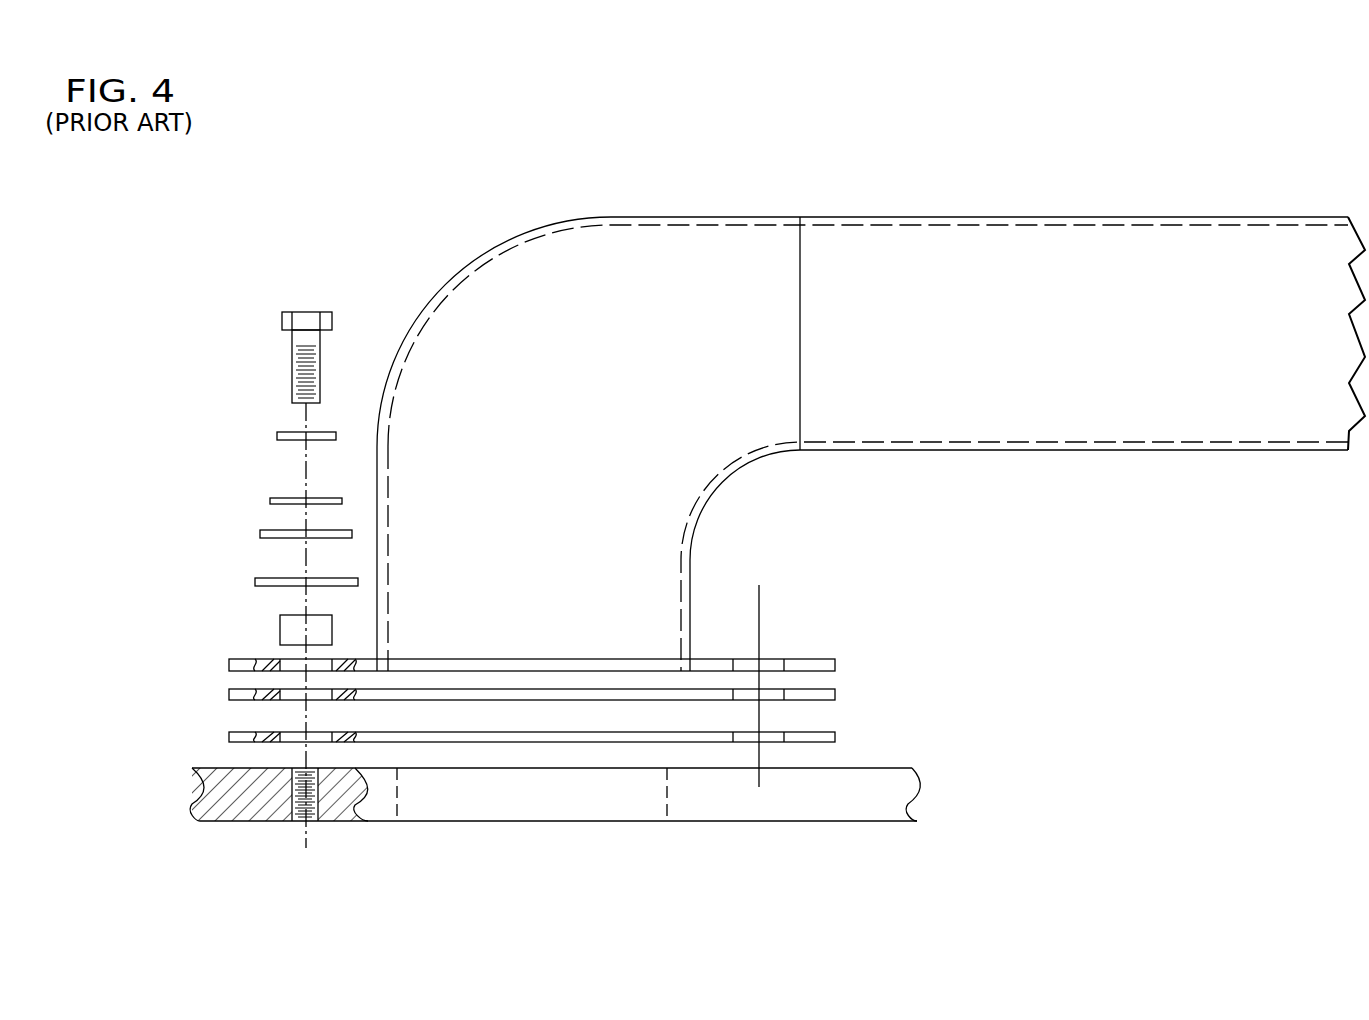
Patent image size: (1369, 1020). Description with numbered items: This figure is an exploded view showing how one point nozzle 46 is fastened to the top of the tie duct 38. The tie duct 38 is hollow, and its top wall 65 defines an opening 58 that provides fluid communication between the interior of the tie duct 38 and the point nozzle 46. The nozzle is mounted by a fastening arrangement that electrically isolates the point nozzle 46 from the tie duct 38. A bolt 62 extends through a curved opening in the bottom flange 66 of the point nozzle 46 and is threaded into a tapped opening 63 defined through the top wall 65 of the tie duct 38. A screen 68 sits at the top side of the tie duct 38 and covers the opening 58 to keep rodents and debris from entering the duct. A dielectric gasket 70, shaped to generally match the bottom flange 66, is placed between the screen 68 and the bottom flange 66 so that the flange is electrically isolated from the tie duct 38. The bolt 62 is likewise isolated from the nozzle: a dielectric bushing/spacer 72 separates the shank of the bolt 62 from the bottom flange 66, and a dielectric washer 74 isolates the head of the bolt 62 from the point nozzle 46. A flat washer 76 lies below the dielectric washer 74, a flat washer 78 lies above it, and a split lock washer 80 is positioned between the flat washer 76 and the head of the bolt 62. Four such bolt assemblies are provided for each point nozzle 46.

The point nozzle 46 is at (945, 217).
The bolt 62 is at (308, 311).
The split lock washer 80 is at (279, 436).
The flat washer 78 is at (272, 500).
The dielectric washer 74 is at (262, 533).
The flat washer 76 is at (257, 581).
The dielectric bushing/spacer 72 is at (281, 625).
The bottom flange 66 is at (836, 664).
The dielectric gasket 70 is at (836, 694).
The screen 68 is at (836, 737).
The tie duct 38 is at (912, 768).
The top wall 65 is at (871, 822).
The tapped opening 63 is at (297, 814).
The opening 58 is at (397, 814).